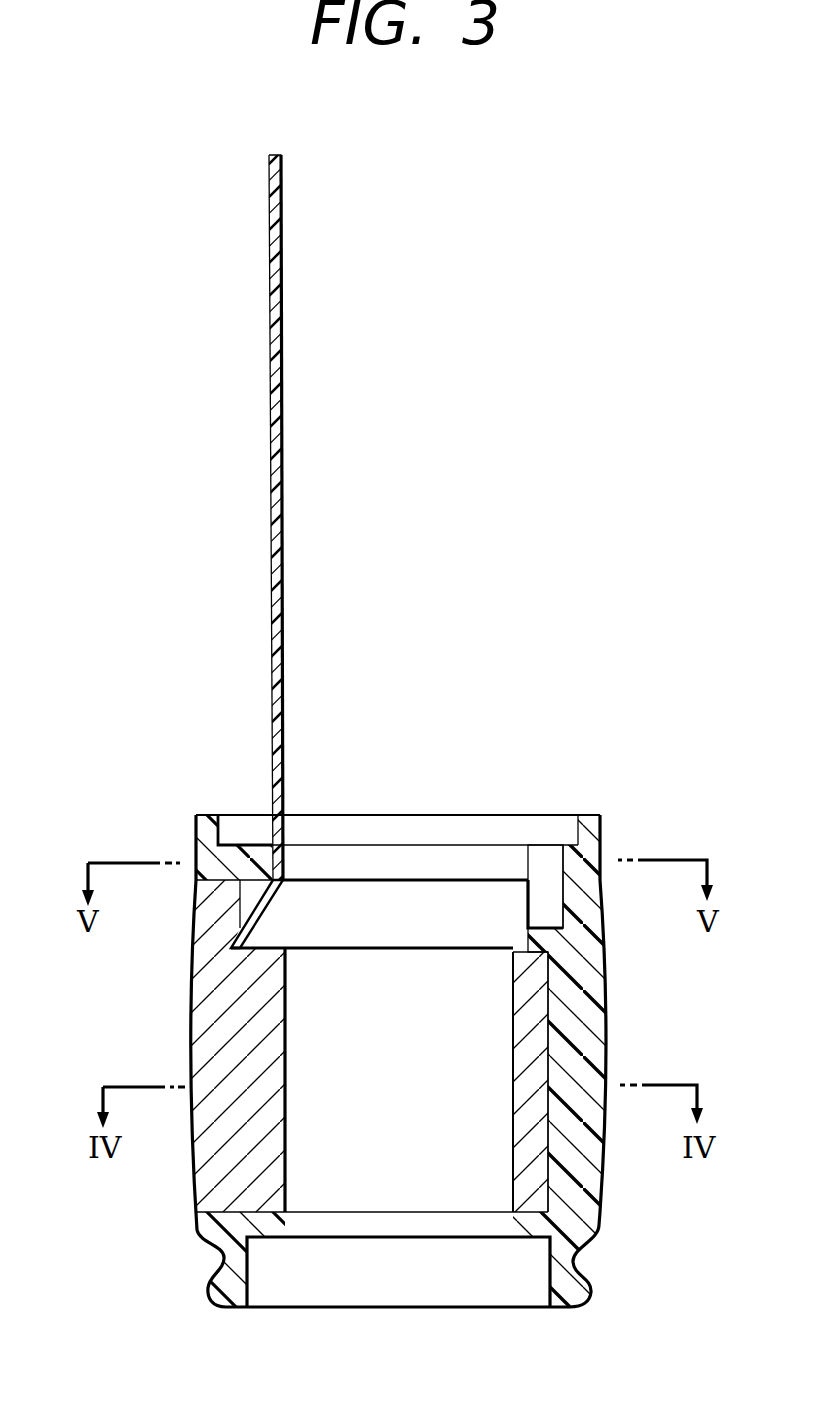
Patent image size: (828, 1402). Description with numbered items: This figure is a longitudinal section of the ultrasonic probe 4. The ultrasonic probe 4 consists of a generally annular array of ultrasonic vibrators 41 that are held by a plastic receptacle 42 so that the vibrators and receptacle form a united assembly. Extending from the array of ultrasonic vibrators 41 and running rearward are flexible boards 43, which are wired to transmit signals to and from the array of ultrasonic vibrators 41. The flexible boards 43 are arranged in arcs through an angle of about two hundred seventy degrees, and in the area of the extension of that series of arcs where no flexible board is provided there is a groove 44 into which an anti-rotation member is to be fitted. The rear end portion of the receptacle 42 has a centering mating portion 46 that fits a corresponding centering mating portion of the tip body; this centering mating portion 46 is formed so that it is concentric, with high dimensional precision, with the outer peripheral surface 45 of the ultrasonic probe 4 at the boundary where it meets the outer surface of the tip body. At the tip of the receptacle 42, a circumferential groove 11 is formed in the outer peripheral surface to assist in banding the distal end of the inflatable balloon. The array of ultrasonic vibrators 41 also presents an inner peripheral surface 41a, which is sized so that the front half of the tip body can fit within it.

The ultrasonic probe 4 is at (166, 1191).
The circumferential groove 11 is at (587, 1256).
The ultrasonic vibrators 41 is at (193, 1015).
The inner peripheral surface 41a is at (513, 1137).
The receptacle 42 is at (604, 1018).
The flexible boards 43 is at (284, 405).
The groove 44 is at (552, 860).
The outer peripheral surface 45 is at (196, 835).
The centering mating portion 46 is at (222, 835).